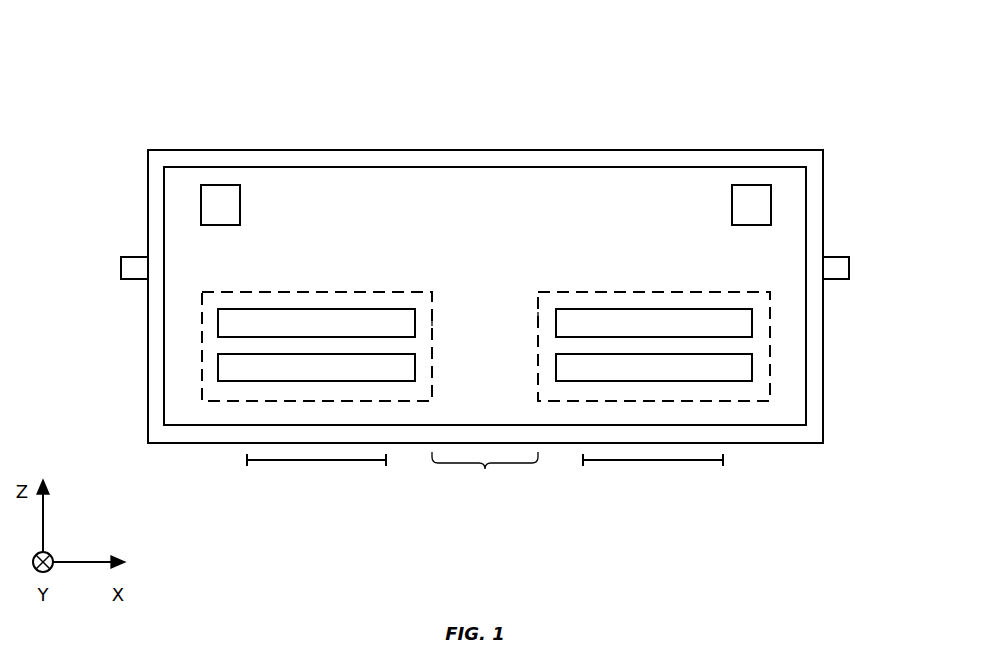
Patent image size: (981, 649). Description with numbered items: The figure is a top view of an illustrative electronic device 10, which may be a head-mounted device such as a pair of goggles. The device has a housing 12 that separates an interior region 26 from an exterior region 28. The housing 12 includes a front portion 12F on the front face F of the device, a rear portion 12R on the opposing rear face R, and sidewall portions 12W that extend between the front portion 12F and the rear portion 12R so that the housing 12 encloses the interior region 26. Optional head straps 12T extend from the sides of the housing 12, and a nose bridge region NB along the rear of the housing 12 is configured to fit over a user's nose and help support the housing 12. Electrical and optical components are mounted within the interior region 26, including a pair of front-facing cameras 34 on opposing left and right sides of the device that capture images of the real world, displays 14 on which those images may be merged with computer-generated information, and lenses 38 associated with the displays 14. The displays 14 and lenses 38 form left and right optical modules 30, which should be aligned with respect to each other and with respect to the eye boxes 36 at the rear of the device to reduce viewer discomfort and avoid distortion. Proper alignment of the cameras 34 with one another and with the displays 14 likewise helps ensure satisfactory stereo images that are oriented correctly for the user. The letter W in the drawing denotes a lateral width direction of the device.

The electronic device 10 is at (485, 264).
The housing 12 is at (823, 408).
The front portion 12F is at (308, 160).
The rear portion 12R is at (182, 430).
The sidewall portions 12W is at (157, 212).
The head straps 12T is at (130, 270).
The displays 14 is at (314, 320).
The interior region 26 is at (566, 208).
The exterior region 28 is at (305, 43).
The optical modules 30 is at (432, 318).
The front-facing cameras 34 is at (221, 195).
The eye boxes 36 is at (386, 460).
The lenses 38 is at (556, 368).
The nose bridge region NB is at (485, 475).
The front face F is at (495, 113).
The rear face R is at (778, 458).
The width direction W is at (852, 173).